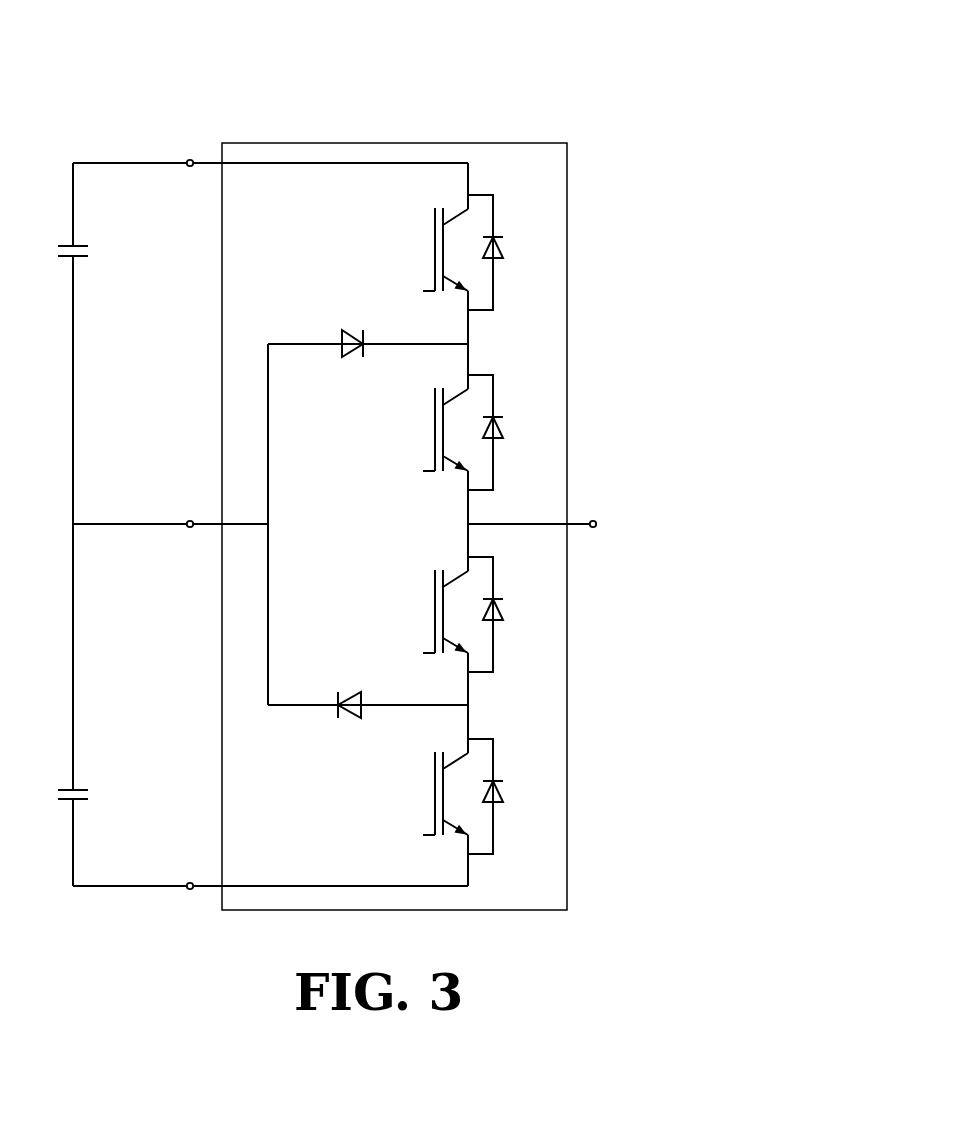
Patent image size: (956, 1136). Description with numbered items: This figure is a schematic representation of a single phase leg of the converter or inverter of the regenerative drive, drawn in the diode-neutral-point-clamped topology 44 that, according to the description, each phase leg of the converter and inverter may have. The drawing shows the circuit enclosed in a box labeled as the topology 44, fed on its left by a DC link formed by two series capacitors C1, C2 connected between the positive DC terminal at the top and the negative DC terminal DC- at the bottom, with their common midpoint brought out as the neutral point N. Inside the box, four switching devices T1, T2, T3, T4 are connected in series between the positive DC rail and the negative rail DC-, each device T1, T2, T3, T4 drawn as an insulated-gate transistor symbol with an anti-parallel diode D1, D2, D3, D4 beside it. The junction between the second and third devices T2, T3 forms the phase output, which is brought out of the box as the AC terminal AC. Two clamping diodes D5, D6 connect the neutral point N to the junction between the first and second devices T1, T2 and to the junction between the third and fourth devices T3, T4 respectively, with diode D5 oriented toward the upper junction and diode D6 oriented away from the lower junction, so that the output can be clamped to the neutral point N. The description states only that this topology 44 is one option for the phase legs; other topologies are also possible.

The diode-neutral-point-clamped (DNPC) topology 44 is at (431, 459).
The first IGBT switch T1 is at (432, 249).
The second IGBT switch T2 is at (432, 429).
The third IGBT switch T3 is at (432, 611).
The fourth IGBT switch T4 is at (432, 793).
The first freewheeling diode D1 is at (508, 252).
The second freewheeling diode D2 is at (508, 432).
The third freewheeling diode D3 is at (508, 614).
The fourth freewheeling diode D4 is at (508, 796).
The first clamping diode D5 is at (354, 359).
The second clamping diode D6 is at (353, 690).
The upper DC link capacitor C1 is at (97, 252).
The lower DC link capacitor C2 is at (97, 795).
The negative DC terminal DC- is at (159, 870).
The neutral point terminal N is at (177, 525).
The AC output terminal AC is at (554, 529).